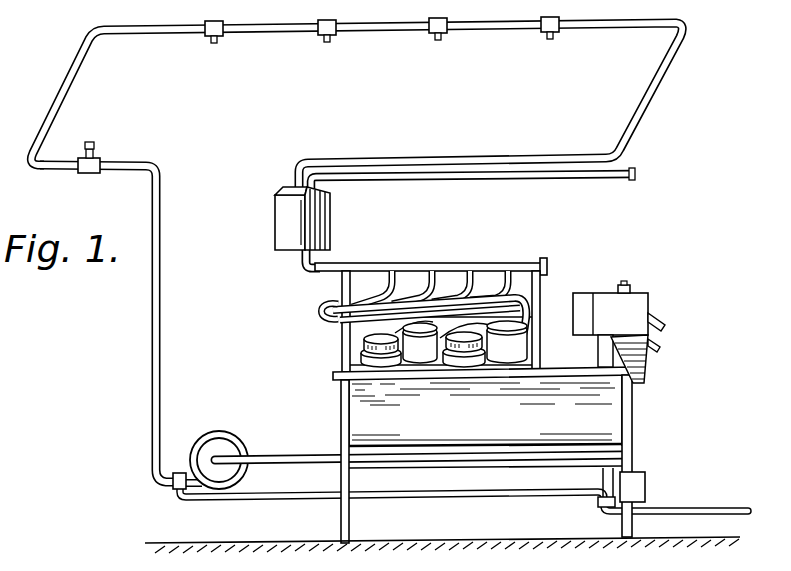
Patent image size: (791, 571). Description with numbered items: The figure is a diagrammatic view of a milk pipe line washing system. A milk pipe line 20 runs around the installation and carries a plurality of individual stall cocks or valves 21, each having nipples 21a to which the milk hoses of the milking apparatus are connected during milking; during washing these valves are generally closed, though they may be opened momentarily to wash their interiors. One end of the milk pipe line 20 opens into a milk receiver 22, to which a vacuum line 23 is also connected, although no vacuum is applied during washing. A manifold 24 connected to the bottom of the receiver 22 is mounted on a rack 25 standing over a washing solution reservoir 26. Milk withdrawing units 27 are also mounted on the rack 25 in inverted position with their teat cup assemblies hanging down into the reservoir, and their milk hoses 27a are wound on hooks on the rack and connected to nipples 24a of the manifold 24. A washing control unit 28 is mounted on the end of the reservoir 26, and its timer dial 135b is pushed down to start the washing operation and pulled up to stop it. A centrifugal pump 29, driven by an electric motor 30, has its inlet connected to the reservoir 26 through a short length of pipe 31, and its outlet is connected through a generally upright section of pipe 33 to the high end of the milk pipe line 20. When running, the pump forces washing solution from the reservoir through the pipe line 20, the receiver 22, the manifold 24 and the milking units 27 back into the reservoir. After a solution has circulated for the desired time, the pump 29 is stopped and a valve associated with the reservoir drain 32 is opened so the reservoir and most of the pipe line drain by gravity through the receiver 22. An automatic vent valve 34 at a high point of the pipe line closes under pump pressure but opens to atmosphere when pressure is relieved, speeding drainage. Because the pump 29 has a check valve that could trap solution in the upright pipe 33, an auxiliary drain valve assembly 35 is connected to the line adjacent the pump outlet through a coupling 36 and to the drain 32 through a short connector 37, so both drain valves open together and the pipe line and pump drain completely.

The milk pipe line 20 is at (268, 33).
The stall cocks or valves 21 is at (205, 38).
The nipples 21a is at (214, 44).
The milk receiver 22 is at (312, 221).
The vacuum line 23 is at (537, 178).
The manifold 24 is at (420, 265).
The nipples of manifold 24a is at (380, 262).
The rack 25 is at (541, 293).
The washing solution reservoir 26 is at (593, 437).
The milk withdrawing units 27 is at (400, 366).
The milk hoses 27a is at (330, 303).
The washing control unit 28 is at (653, 297).
The centrifugal pump 29 is at (213, 447).
The electric motor 30 is at (243, 438).
The pipe 31 is at (295, 449).
The reservoir drain 32 is at (667, 508).
The upright section of pipe 33 is at (153, 343).
The automatic vent valve 34 is at (82, 158).
The auxiliary drain valve assembly 35 is at (645, 478).
The coupling 36 is at (173, 489).
The short connector 37 is at (602, 513).
The timer dial 135b is at (625, 285).